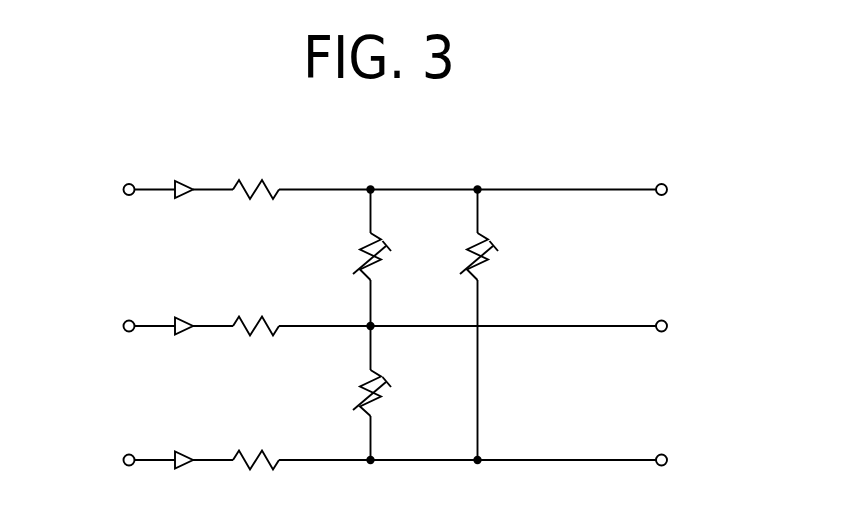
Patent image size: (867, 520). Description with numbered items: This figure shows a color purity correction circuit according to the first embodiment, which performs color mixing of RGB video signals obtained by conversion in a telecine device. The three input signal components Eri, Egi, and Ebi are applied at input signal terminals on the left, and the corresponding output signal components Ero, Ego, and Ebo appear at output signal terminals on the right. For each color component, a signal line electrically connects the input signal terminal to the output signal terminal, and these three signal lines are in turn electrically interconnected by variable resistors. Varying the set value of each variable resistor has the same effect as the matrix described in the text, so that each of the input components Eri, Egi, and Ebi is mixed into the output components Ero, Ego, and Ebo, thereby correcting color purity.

The red input signal component Eri is at (145, 187).
The green input signal component Egi is at (145, 326).
The blue input signal component Ebi is at (145, 457).
The red output signal component Ero is at (513, 185).
The green output signal component Ego is at (515, 323).
The blue output signal component Ebo is at (515, 456).